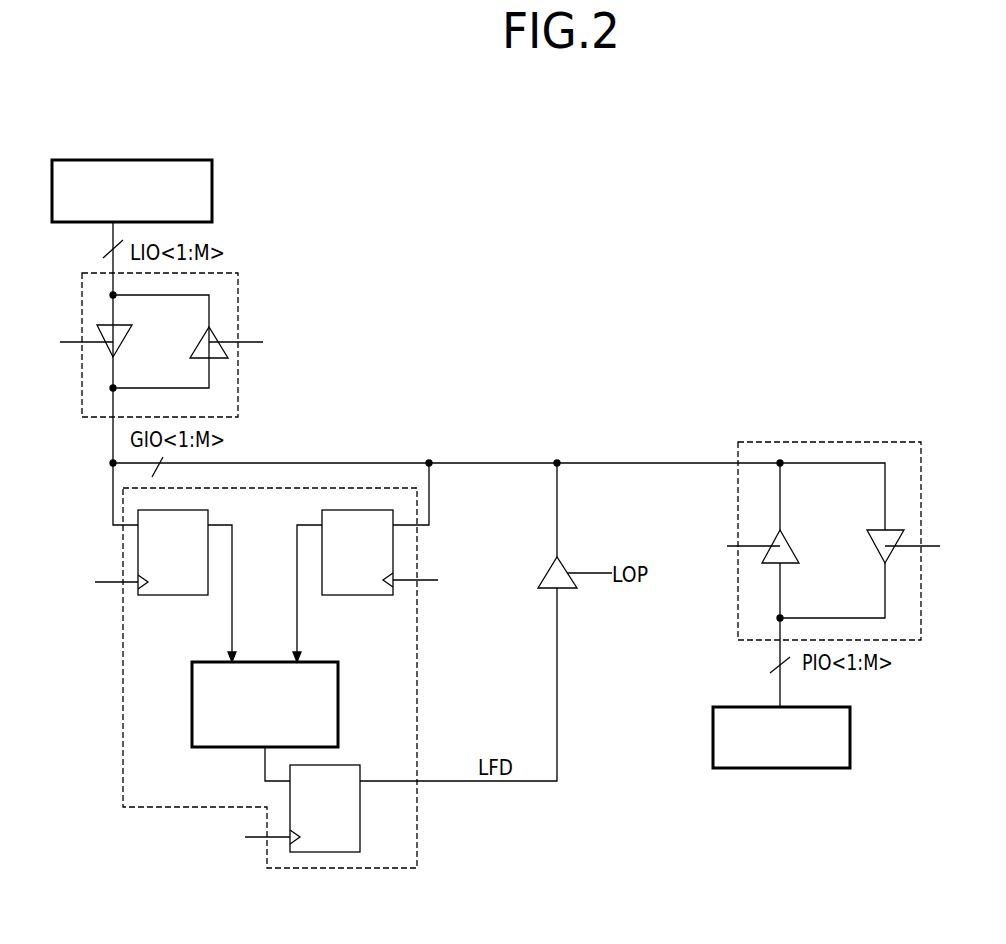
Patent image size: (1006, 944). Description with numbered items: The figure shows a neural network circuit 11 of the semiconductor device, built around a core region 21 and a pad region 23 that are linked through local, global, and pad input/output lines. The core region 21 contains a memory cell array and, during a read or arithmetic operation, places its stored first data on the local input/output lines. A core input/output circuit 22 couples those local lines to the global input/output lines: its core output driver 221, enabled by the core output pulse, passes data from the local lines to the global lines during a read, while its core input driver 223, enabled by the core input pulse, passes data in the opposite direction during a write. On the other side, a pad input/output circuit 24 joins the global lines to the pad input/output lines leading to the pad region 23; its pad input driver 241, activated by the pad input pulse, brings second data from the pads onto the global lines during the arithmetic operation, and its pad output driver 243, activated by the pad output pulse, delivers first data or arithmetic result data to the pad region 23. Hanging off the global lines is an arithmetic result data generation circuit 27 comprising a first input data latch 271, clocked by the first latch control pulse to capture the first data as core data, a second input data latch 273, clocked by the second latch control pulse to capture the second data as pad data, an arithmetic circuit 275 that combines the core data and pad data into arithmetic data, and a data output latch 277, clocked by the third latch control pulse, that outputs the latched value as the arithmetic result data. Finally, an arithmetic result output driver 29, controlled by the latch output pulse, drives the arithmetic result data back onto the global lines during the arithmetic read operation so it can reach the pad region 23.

The neural network circuit 11 is at (917, 212).
The core region 21 is at (212, 190).
The core input/output circuit 22 is at (162, 368).
The core output driver 221 is at (120, 350).
The core input driver 223 is at (197, 340).
The pad region 23 is at (850, 735).
The pad input/output circuit 24 is at (839, 574).
The pad input driver 241 is at (788, 540).
The pad output driver 243 is at (876, 548).
The arithmetic result data generation circuit 27 is at (268, 691).
The first input data latch 271 is at (170, 598).
The second input data latch 273 is at (355, 598).
The arithmetic circuit 275 is at (338, 700).
The data output latch 277 is at (322, 855).
The arithmetic result output driver 29 is at (565, 560).